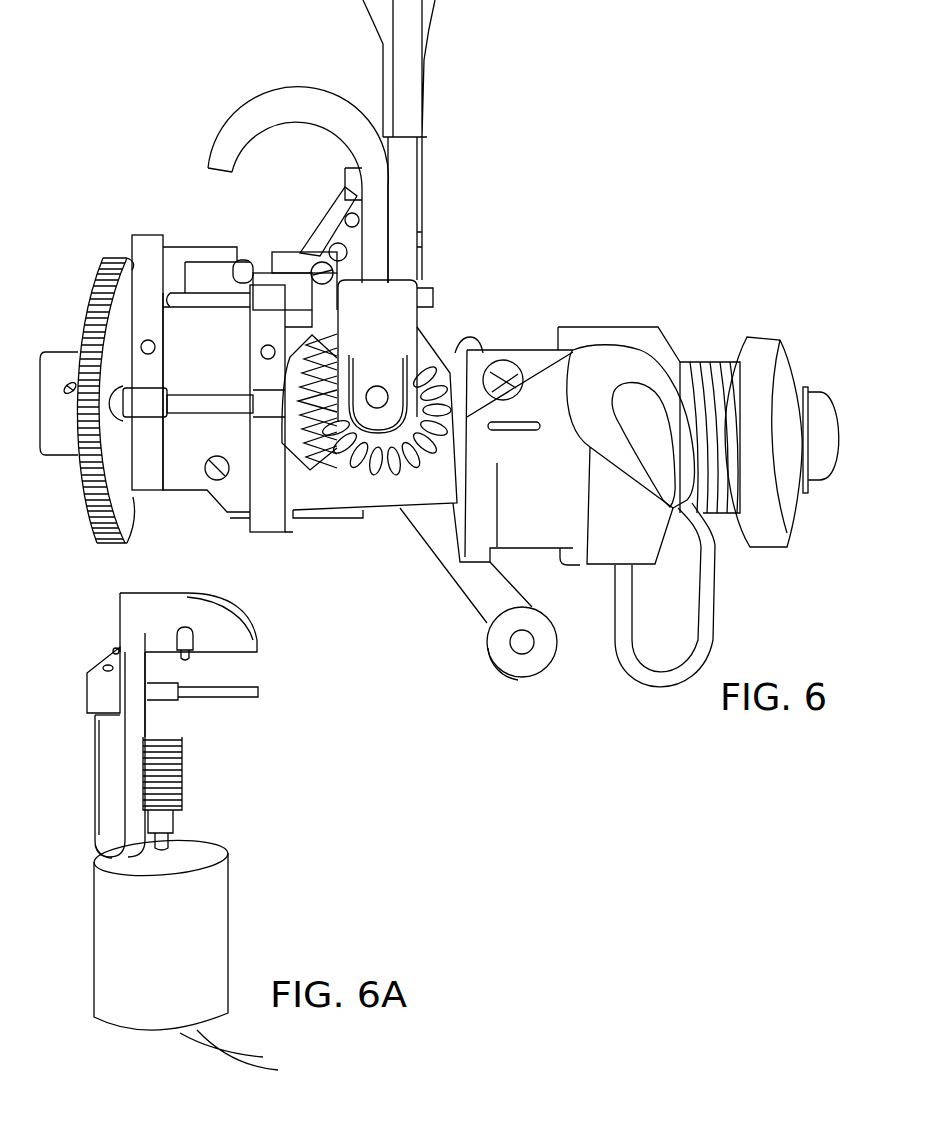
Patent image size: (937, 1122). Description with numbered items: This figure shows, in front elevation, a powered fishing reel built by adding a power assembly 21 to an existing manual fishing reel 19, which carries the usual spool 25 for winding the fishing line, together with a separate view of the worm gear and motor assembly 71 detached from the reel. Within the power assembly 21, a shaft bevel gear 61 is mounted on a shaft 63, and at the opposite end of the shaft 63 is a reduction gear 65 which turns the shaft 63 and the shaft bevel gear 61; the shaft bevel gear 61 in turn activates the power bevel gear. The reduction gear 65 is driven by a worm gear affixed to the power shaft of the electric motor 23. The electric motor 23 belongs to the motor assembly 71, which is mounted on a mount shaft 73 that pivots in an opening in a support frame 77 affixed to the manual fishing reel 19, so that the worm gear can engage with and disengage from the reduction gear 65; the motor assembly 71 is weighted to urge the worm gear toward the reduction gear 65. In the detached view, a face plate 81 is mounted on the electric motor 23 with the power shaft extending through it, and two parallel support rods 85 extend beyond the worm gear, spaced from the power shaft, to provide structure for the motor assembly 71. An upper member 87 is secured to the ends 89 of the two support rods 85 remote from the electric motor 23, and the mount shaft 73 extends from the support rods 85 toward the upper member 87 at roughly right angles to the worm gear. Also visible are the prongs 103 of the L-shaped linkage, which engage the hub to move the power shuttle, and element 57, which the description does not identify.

In FIG. 6, the manual fishing reel 19 is at (707, 368).
In FIG. 6, the power assembly 21 is at (136, 210).
In FIG. 6A, the electric motor 23 is at (205, 932).
In FIG. 6, the spool 25 is at (718, 514).
In FIG. 6, the roller arm 57 is at (475, 594).
In FIG. 6, the shaft bevel gear 61 is at (292, 440).
In FIG. 6, the shaft 63 is at (217, 402).
In FIG. 6, the reduction gear 65 is at (92, 290).
In FIG. 6A, the motor assembly 71 is at (105, 818).
In FIG. 6A, the mount shaft 73 is at (208, 693).
In FIG. 6A, the support frame 77 is at (110, 767).
In FIG. 6A, the face plate 81 is at (187, 843).
In FIG. 6A, the support rods 85 is at (110, 845).
In FIG. 6A, the upper member 87 is at (133, 643).
In FIG. 6A, the ends 89 is at (117, 718).
In FIG. 6, the prongs 103 is at (410, 373).